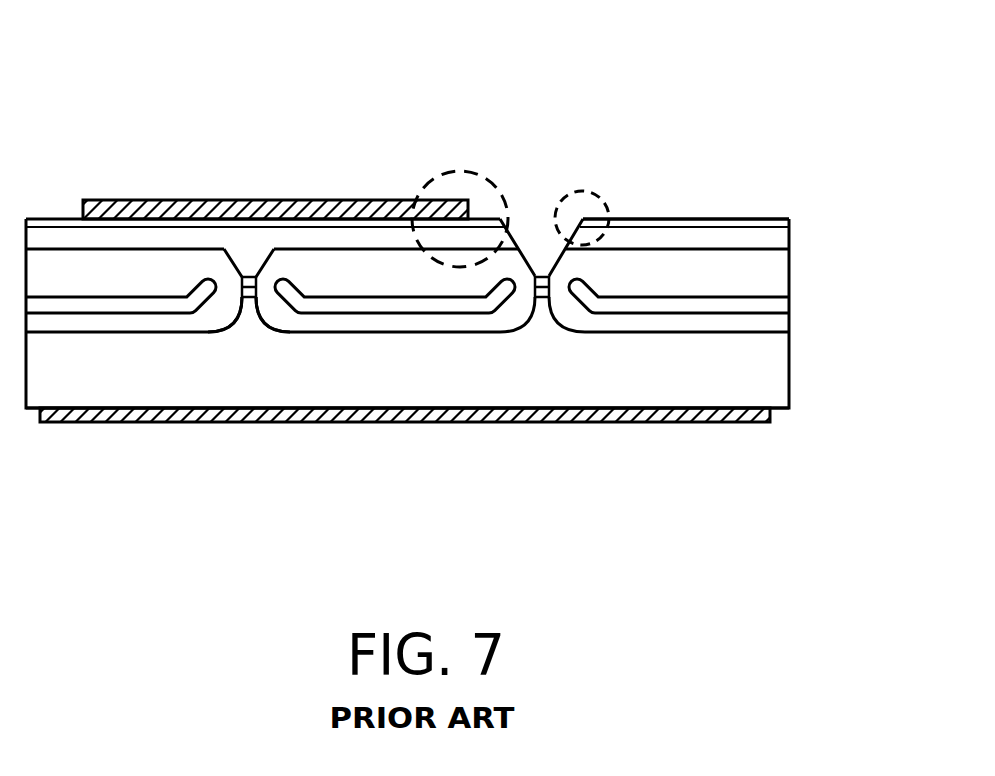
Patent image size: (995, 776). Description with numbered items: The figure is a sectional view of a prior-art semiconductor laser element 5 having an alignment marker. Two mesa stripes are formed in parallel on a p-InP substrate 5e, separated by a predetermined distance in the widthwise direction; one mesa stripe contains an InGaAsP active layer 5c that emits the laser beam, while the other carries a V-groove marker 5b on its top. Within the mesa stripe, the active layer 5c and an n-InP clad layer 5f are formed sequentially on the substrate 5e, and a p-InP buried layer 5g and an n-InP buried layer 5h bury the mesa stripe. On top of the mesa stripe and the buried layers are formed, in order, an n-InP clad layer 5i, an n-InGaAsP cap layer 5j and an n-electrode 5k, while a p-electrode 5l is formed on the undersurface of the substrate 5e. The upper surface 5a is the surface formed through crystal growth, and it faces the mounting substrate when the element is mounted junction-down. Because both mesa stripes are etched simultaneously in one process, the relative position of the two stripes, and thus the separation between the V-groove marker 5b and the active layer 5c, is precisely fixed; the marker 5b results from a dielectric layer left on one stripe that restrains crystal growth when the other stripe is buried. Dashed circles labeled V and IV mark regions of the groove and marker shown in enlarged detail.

The semiconductor laser element 5 is at (407, 130).
The upper surface 5a is at (697, 212).
The V-groove marker 5b is at (513, 205).
The active layer 5c is at (250, 297).
The substrate 5e is at (773, 367).
The n-InP clad layer 5f is at (252, 277).
The p-InP buried layer 5g is at (778, 322).
The n-InP buried layer 5h is at (778, 307).
The n-InP clad layer 5i is at (782, 240).
The n-InGaAsP cap layer 5j is at (790, 223).
The n-electrode 5k is at (138, 208).
The p-electrode 5l is at (772, 414).
The detail view V circle V is at (460, 167).
The detail view IV circle IV is at (580, 190).